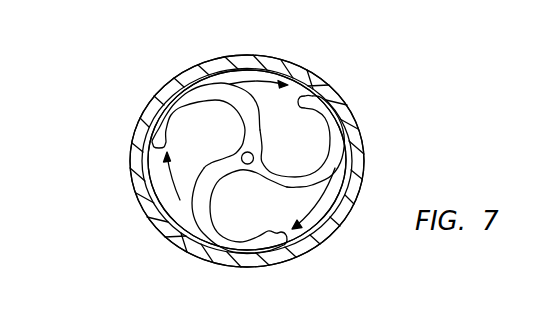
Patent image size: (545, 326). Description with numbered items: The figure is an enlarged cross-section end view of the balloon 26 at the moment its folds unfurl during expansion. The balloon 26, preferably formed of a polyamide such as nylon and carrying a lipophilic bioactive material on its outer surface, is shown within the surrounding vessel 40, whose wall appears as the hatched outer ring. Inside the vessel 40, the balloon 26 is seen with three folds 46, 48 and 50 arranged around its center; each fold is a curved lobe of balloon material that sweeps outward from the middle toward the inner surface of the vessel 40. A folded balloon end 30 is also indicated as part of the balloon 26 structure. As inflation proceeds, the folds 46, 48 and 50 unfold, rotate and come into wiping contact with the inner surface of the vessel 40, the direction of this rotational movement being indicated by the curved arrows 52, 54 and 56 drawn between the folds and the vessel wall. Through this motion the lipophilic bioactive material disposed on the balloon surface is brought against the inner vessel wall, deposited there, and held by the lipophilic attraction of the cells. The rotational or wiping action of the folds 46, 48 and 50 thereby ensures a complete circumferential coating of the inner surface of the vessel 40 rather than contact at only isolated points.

The balloon 26 is at (260, 118).
The balloon end 30 is at (253, 203).
The vessel 40 is at (367, 152).
The fold 46 is at (314, 108).
The fold 48 is at (228, 243).
The fold 50 is at (158, 120).
The arrow 52 is at (323, 208).
The arrow 54 is at (178, 195).
The arrow 56 is at (228, 60).